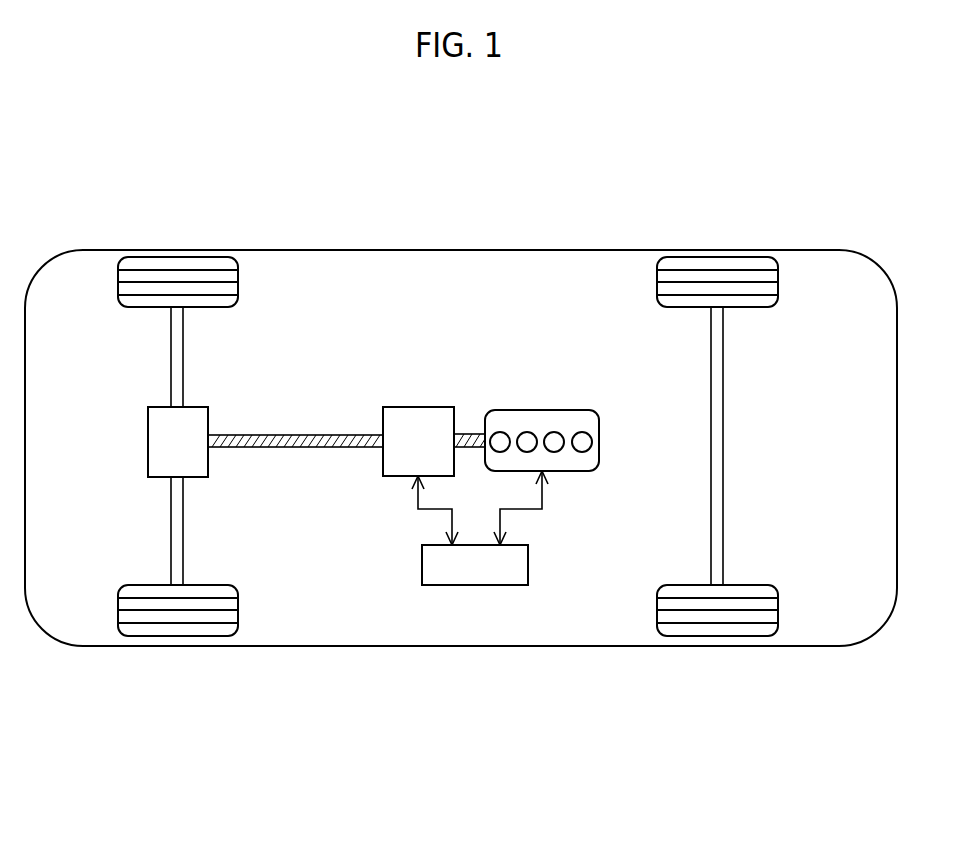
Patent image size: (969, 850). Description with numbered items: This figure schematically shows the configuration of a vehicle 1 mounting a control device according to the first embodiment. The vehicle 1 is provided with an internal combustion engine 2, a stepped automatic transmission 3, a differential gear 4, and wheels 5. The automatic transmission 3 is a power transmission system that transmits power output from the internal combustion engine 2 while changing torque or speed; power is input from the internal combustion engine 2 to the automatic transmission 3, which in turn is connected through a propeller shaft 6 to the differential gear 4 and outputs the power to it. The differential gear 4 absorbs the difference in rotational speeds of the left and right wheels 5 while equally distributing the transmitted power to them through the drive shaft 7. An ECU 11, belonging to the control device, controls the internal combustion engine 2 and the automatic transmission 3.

The vehicle 1 is at (311, 216).
The internal combustion engine 2 is at (551, 410).
The stepped automatic transmission 3 is at (434, 407).
The differential gear 4 is at (148, 416).
The wheels 5 is at (173, 257).
The propeller shaft 6 is at (286, 436).
The drive shaft 7 is at (171, 536).
The ECU 11 is at (484, 585).